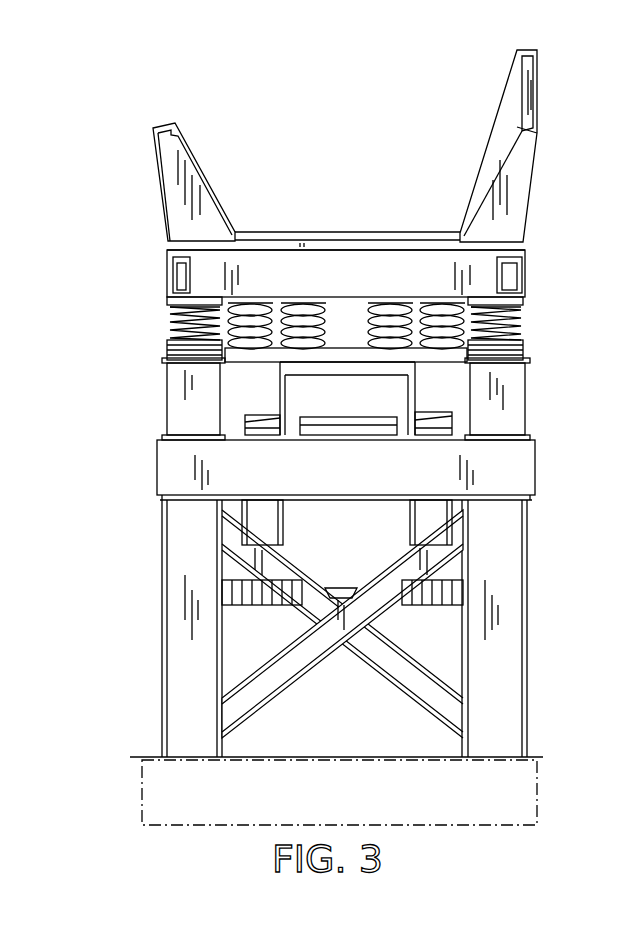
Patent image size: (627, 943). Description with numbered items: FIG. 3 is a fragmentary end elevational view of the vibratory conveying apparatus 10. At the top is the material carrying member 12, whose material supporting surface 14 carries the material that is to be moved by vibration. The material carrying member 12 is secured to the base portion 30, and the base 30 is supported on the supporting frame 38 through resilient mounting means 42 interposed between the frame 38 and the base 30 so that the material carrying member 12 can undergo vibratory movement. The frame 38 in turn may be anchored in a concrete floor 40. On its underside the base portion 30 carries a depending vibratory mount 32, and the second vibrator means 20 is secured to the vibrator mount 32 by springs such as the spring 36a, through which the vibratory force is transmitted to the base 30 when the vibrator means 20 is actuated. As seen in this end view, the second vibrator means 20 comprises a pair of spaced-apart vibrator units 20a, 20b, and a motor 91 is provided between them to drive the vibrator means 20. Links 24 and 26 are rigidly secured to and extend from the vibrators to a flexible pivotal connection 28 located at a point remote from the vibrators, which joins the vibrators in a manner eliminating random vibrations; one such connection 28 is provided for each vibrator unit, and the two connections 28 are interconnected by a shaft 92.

The vibratory conveying apparatus 10 is at (341, 160).
The material carrying member 12 is at (478, 163).
The material supporting surface 14 is at (360, 232).
The second vibrator means 20 is at (458, 398).
The vibrator unit 20a is at (455, 418).
The vibrator unit 20b is at (245, 422).
The link 24 is at (222, 508).
The link 26 is at (415, 535).
The flexible pivotal connection 28 is at (262, 625).
The base portion 30 is at (525, 276).
The vibratory mount 32 is at (345, 310).
The spring 36a is at (300, 302).
The supporting frame 38 is at (538, 637).
The concrete floor 40 is at (552, 757).
The resilient mounting means 42 is at (172, 322).
The motor 91 is at (363, 427).
The shaft 92 is at (360, 560).